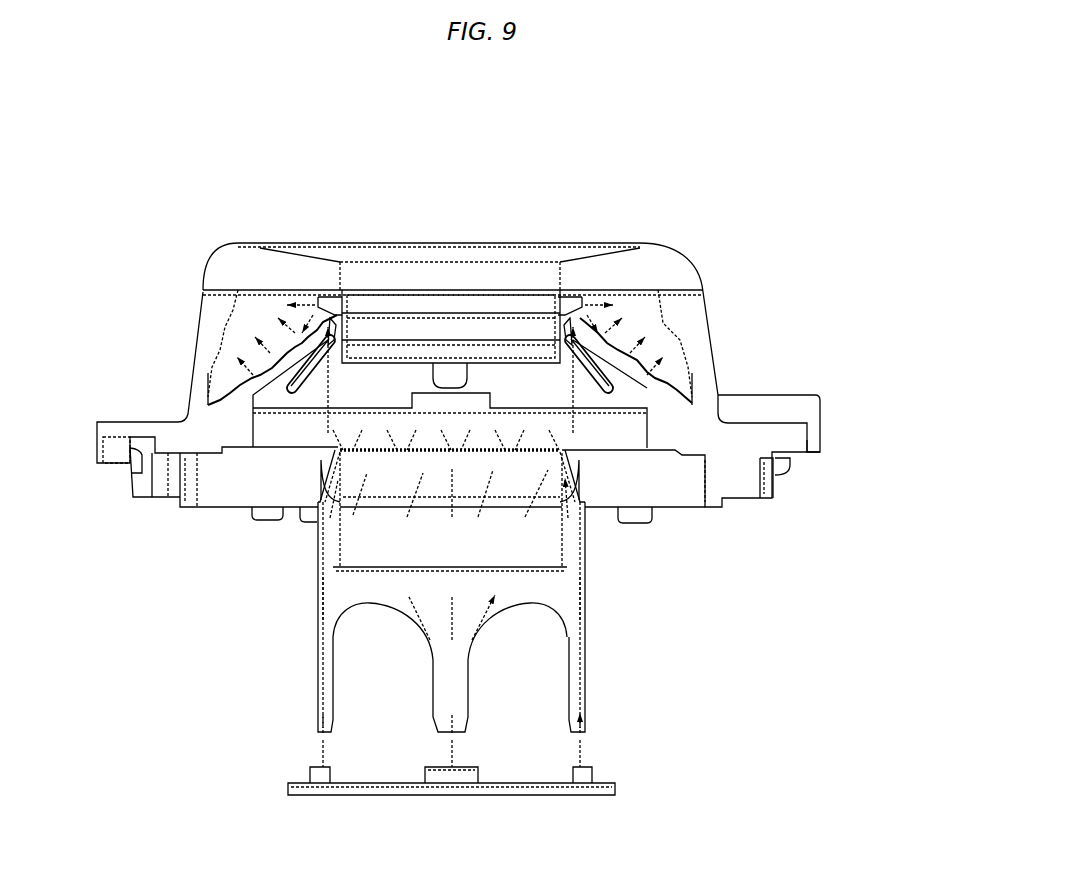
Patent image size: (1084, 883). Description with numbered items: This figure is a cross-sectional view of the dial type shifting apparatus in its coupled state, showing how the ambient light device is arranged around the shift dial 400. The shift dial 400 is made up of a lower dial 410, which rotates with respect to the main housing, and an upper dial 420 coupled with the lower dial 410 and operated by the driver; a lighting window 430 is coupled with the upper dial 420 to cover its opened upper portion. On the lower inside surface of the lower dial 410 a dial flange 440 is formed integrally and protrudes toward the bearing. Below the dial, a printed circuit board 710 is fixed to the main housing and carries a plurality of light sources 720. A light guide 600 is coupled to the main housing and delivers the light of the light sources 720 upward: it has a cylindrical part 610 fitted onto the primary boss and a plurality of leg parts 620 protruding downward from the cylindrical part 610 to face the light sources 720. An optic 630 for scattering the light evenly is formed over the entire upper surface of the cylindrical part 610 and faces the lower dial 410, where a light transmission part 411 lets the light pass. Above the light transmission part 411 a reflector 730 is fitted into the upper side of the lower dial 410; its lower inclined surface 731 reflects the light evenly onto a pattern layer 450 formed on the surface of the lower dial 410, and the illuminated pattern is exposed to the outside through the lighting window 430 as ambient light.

The shift dial 400 is at (185, 332).
The lower dial 410 is at (692, 373).
The light transmission part 411 is at (565, 328).
The upper dial 420 is at (705, 328).
The lighting window 430 is at (590, 247).
The dial flange 440 is at (215, 497).
The pattern layer 450 is at (650, 362).
The light guide 600 is at (595, 575).
The cylindrical part 610 is at (328, 553).
The leg parts 620 is at (450, 693).
The optic 630 is at (522, 443).
The Printed Circuit Board (PCB) 710 is at (380, 795).
The light sources 720 is at (320, 783).
The reflector 730 is at (577, 305).
The inclined surface 731 is at (575, 338).